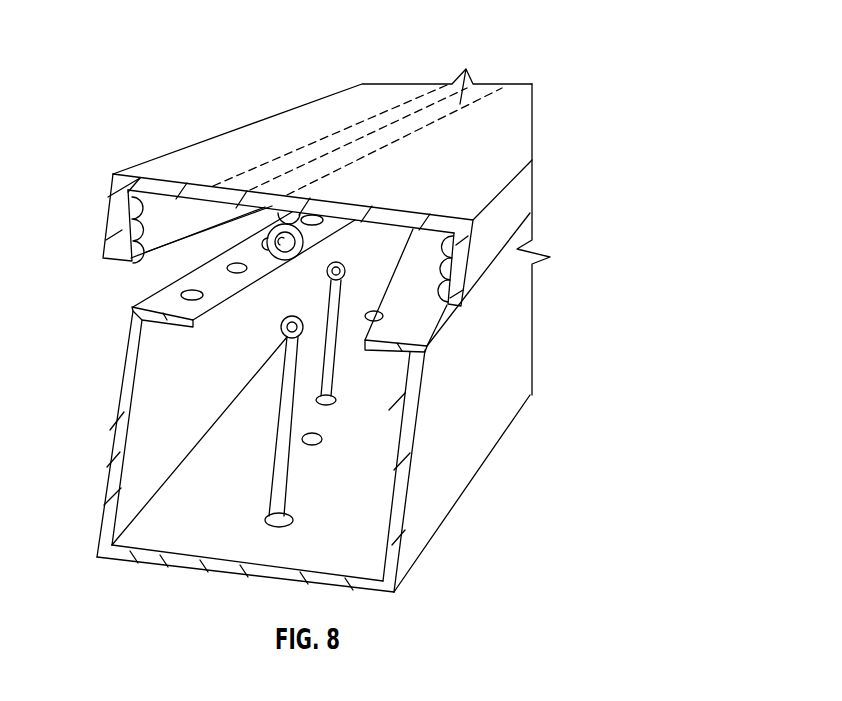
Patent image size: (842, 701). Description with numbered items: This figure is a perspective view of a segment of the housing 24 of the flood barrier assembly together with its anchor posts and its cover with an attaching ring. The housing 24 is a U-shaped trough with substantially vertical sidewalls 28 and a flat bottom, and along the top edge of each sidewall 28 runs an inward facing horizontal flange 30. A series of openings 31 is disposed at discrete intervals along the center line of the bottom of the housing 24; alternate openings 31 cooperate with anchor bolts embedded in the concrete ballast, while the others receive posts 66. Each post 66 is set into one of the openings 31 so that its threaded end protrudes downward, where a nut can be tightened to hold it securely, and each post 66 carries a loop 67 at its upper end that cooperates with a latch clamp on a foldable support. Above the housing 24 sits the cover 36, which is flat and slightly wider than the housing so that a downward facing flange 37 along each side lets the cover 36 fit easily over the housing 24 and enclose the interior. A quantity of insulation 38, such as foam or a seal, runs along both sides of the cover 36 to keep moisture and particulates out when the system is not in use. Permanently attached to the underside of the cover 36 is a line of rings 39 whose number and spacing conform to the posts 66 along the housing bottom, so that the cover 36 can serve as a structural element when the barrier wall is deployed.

The housing 24 is at (472, 483).
The sidewalls 28 is at (201, 394).
The horizontal flange 30 is at (170, 298).
The openings 31 is at (323, 442).
The cover 36 is at (250, 127).
The downward facing flange 37 is at (103, 228).
The insulation 38 is at (160, 213).
The rings 39 is at (307, 252).
The posts 66 is at (272, 495).
The loop 67 is at (282, 333).